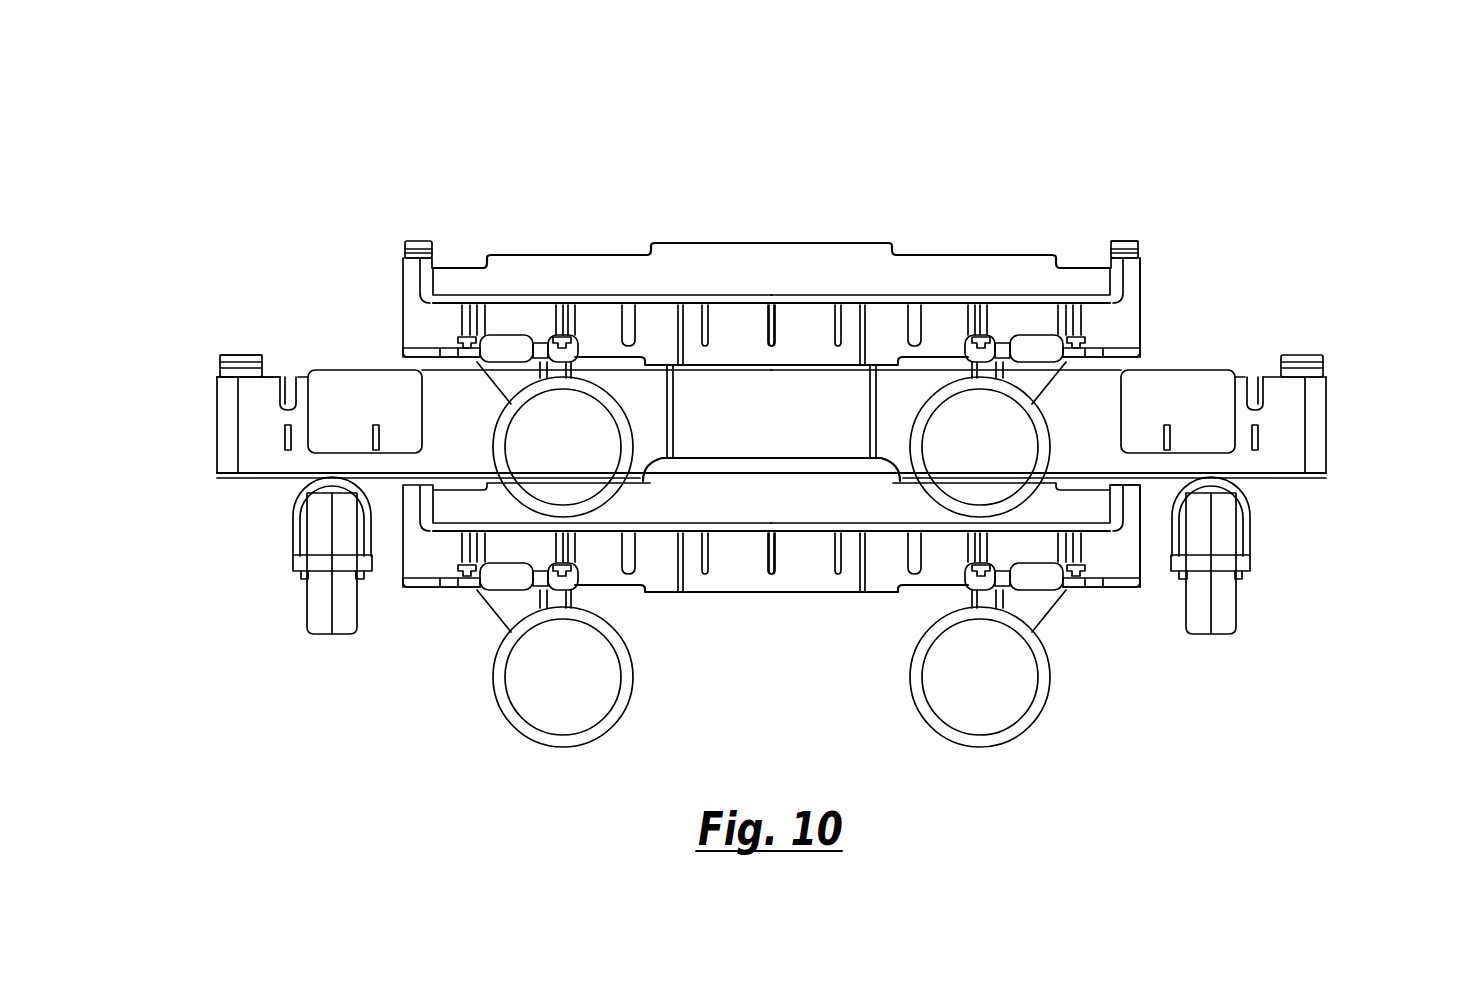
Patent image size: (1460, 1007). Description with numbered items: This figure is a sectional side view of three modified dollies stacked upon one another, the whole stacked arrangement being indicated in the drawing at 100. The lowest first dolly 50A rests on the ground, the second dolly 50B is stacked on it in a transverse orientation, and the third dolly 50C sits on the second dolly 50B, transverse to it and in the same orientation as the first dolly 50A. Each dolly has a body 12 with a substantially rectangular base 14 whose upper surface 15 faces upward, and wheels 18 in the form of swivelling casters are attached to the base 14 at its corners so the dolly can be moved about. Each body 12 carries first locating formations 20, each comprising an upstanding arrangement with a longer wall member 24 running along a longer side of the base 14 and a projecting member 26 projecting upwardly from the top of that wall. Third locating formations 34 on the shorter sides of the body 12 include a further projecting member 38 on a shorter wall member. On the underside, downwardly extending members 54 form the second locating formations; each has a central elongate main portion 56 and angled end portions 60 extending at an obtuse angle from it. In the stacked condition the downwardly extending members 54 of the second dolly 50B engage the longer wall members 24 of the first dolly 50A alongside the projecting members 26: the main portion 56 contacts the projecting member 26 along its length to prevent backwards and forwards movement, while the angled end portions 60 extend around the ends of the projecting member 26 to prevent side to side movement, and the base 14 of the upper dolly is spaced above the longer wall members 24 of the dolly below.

The body 12 is at (777, 238).
The base 14 is at (950, 305).
The upper surface 15 is at (706, 360).
The wheels 18 is at (978, 677).
The first locating formation 20 is at (370, 362).
The longer wall member 24 is at (413, 280).
The projecting member 26 is at (417, 243).
The third locating formation 34 is at (210, 400).
The further projecting member 38 is at (220, 362).
The first dolly 50A is at (1110, 620).
The second dolly 50B is at (240, 325).
The third dolly 50C is at (1172, 250).
The downwardly extending member 54 is at (722, 362).
The central elongate main portion 56 is at (752, 360).
The angled end portion 60 is at (662, 355).
The cart assembly 100 is at (240, 550).